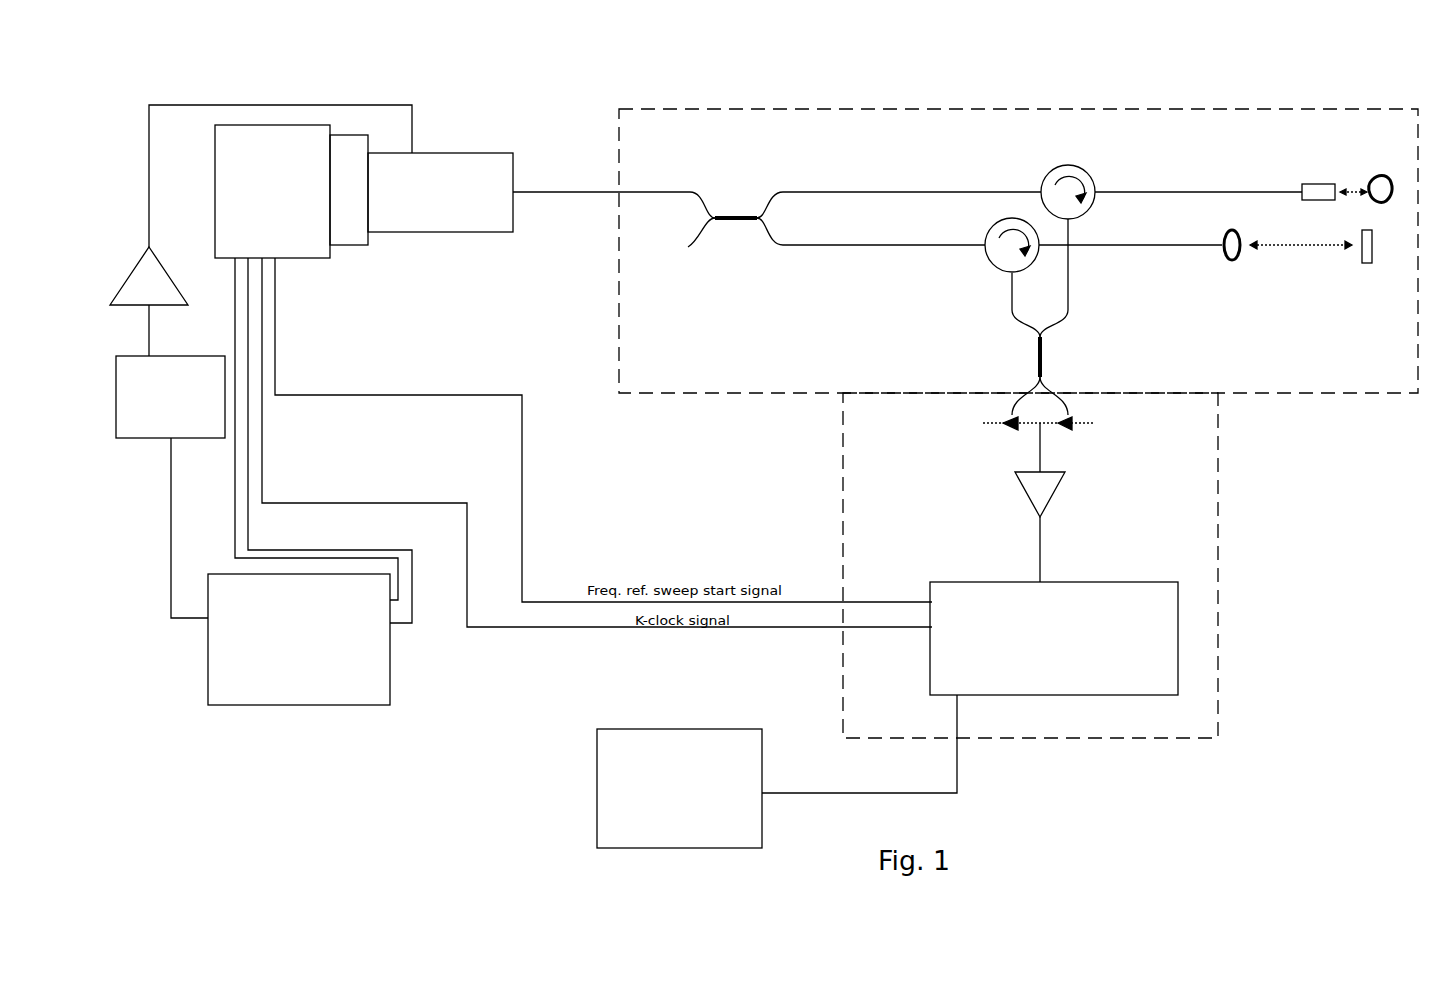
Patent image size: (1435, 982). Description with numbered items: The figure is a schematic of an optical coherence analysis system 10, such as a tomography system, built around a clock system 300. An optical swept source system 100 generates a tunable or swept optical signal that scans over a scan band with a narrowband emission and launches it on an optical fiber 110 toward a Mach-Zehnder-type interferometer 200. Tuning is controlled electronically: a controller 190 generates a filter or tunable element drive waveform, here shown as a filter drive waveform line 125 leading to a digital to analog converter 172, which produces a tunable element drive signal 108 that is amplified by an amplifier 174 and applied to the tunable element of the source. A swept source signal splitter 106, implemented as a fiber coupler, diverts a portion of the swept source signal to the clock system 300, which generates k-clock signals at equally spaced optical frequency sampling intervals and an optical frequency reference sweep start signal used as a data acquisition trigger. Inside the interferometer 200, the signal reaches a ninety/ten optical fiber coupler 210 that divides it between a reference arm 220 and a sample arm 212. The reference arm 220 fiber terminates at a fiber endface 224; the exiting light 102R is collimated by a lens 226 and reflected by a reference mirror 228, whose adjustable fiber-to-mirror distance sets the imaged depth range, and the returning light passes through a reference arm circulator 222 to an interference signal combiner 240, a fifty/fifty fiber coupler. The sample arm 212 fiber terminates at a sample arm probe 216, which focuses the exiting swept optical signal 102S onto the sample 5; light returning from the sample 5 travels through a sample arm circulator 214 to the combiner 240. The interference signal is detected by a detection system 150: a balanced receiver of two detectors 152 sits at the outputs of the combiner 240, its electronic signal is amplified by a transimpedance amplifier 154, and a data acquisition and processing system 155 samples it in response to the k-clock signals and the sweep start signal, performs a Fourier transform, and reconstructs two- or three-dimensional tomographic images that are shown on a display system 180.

The sample 5 is at (1382, 176).
The optical coherence analysis system 10 is at (1210, 781).
The optical swept source system 100 is at (440, 192).
The exiting swept optical signal 102S is at (1360, 188).
The light exiting from the reference arm fiber endface 102R is at (1298, 245).
The swept source signal splitter 106 is at (357, 245).
The tunable element drive signal 108 is at (237, 103).
The optical fiber 110 is at (582, 192).
The filter drive waveform signal 125 is at (233, 495).
The detection system 150 is at (1030, 565).
The detectors 152 is at (1068, 431).
The amplifier 154 is at (1060, 483).
The data acquisition and processing system 155 is at (1122, 582).
The digital to analog converter 172 is at (170, 397).
The amplifier 174 is at (138, 306).
The display system 180 is at (777, 771).
The controller 190 is at (299, 639).
The interferometer 200 is at (1018, 251).
The optical fiber coupler 210 is at (735, 215).
The sample arm 212 is at (891, 192).
The sample arm circulator 214 is at (1060, 167).
The sample arm probe 216 is at (1300, 185).
The reference arm 220 is at (870, 245).
The reference arm circulator 222 is at (987, 265).
The fiber endface 224 is at (1218, 238).
The lens 226 is at (1225, 263).
The reference mirror 228 is at (1373, 263).
The interference signal combiner 240 is at (1042, 357).
The clock system 300 is at (272, 191).